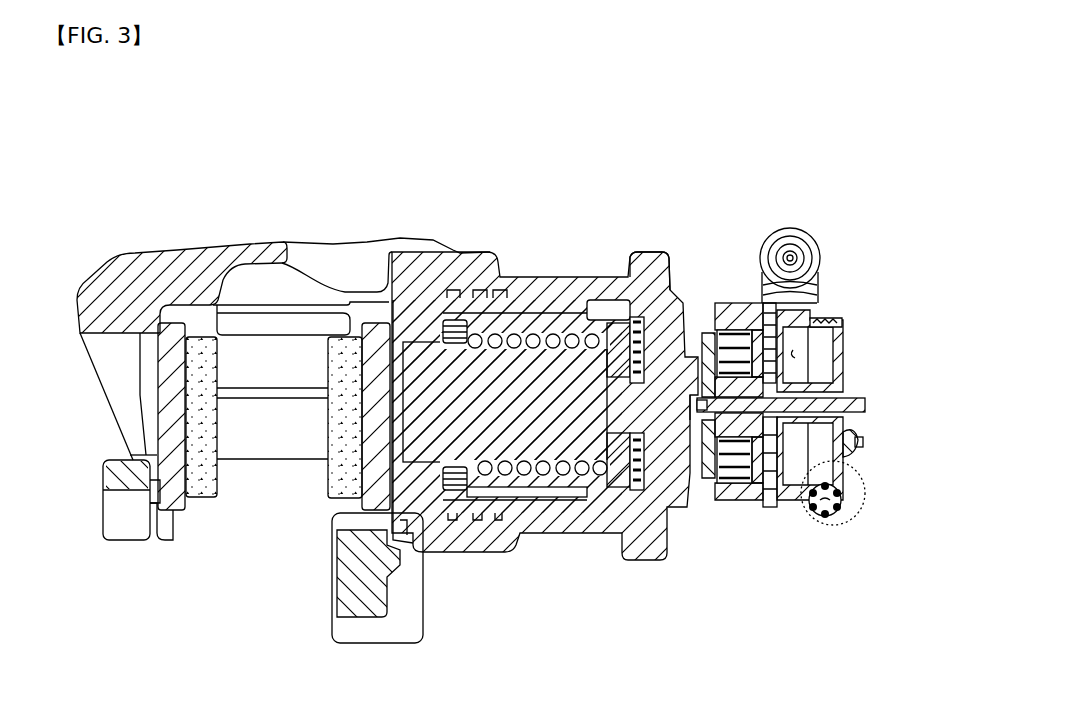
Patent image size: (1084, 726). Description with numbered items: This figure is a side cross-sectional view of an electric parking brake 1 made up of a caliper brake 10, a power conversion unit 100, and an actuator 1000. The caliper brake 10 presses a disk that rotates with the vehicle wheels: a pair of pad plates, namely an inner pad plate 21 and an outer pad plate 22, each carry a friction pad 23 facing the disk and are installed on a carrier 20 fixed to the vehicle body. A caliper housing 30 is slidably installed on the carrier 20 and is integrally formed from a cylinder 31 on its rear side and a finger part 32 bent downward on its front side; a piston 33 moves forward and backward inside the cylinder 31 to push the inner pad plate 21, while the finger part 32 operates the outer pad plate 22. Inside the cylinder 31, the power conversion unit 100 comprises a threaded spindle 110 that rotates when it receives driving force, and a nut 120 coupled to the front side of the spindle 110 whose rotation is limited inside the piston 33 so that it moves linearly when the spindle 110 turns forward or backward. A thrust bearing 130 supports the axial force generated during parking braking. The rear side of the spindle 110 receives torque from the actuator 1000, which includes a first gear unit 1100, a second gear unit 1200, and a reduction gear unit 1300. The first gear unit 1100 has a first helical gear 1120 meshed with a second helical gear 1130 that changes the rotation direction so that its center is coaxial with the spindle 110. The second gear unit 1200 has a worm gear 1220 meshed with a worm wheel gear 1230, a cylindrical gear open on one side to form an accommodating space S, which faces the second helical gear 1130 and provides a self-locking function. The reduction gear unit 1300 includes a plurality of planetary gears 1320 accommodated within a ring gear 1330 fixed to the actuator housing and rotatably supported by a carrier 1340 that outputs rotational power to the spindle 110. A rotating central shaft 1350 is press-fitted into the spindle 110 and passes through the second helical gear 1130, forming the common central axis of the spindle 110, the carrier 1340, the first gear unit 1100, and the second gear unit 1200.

The electric parking brake 1 is at (438, 125).
The caliper brake 10 is at (240, 230).
The carrier 20 is at (363, 610).
The inner pad plate 21 is at (378, 488).
The outer pad plate 22 is at (172, 508).
The friction pad 23 is at (207, 495).
The caliper housing 30 is at (143, 268).
The cylinder 31 is at (541, 262).
The finger part 32 is at (110, 383).
The piston 33 is at (455, 525).
The power conversion unit 100 is at (637, 604).
The spindle 110 is at (515, 450).
The nut 120 is at (562, 487).
The thrust bearing 130 is at (637, 490).
The actuator 1000 is at (892, 270).
The first gear unit 1100 is at (838, 302).
The first helical gear 1120 is at (848, 493).
The second helical gear 1130 is at (840, 322).
The second gear unit 1200 is at (793, 518).
The worm gear 1220 is at (748, 313).
The worm wheel gear 1230 is at (810, 515).
The reduction gear unit 1300 is at (727, 506).
The planetary gears 1320 is at (710, 330).
The ring gear 1330 is at (730, 345).
The carrier 1340 is at (655, 255).
The rotating central shaft 1350 is at (865, 405).
The accommodating space S is at (797, 357).